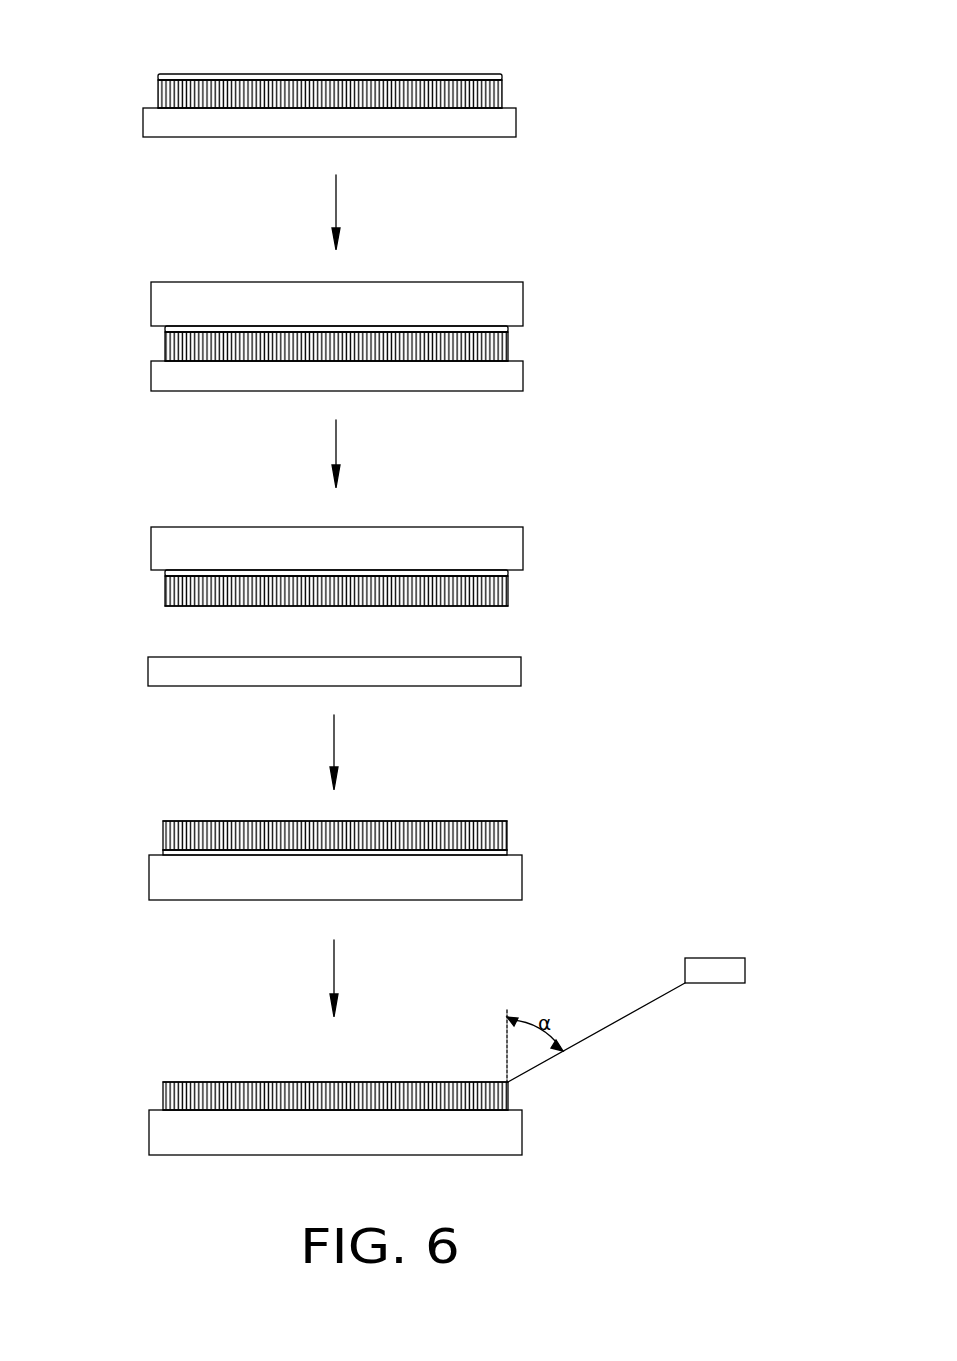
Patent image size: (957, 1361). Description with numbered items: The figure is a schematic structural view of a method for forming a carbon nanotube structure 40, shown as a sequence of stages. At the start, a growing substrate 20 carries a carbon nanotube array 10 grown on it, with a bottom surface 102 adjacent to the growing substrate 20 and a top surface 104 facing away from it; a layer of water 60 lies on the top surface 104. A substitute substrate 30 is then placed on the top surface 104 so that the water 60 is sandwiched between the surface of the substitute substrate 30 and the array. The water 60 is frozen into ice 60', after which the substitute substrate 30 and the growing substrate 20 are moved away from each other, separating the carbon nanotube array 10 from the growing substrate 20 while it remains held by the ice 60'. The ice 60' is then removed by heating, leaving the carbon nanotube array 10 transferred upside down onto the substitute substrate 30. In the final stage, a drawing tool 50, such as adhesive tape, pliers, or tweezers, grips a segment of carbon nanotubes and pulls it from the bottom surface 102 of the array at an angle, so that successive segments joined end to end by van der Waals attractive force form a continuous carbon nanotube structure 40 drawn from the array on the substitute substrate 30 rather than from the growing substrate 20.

The carbon nanotube array 10 is at (497, 90).
The growing substrate 20 is at (505, 125).
The substitute substrate 30 is at (512, 307).
The carbon nanotube structure 40 is at (638, 1008).
The drawing tool 50 is at (715, 970).
The water 60 is at (347, 166).
The ice 60' is at (385, 673).
The bottom surface 102 is at (188, 100).
The top surface 104 is at (190, 108).